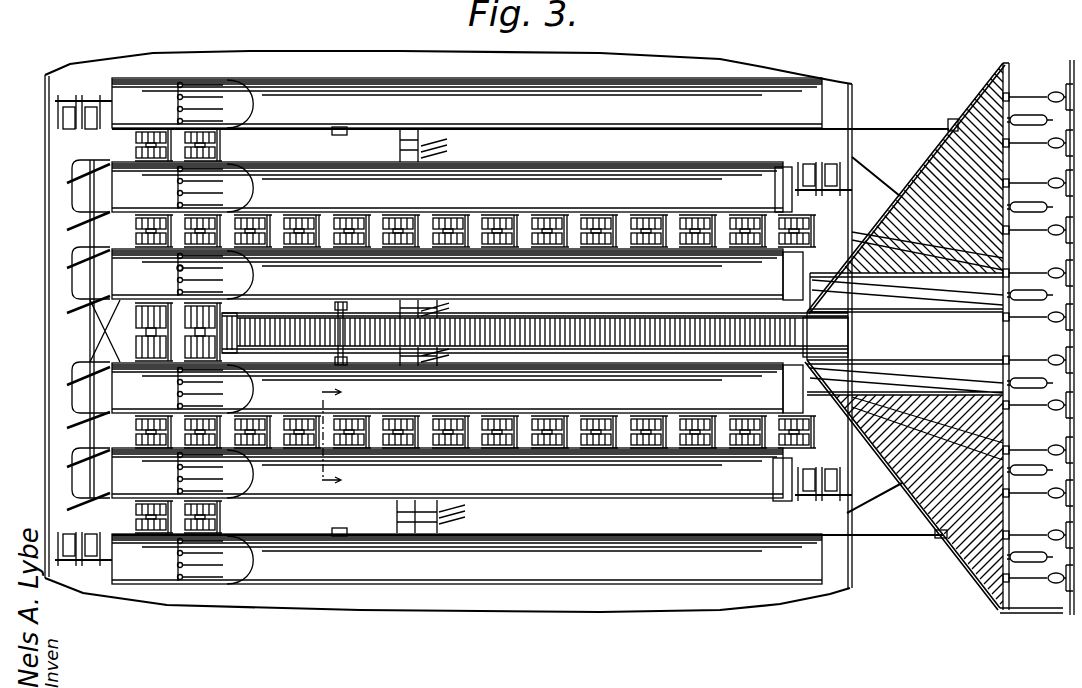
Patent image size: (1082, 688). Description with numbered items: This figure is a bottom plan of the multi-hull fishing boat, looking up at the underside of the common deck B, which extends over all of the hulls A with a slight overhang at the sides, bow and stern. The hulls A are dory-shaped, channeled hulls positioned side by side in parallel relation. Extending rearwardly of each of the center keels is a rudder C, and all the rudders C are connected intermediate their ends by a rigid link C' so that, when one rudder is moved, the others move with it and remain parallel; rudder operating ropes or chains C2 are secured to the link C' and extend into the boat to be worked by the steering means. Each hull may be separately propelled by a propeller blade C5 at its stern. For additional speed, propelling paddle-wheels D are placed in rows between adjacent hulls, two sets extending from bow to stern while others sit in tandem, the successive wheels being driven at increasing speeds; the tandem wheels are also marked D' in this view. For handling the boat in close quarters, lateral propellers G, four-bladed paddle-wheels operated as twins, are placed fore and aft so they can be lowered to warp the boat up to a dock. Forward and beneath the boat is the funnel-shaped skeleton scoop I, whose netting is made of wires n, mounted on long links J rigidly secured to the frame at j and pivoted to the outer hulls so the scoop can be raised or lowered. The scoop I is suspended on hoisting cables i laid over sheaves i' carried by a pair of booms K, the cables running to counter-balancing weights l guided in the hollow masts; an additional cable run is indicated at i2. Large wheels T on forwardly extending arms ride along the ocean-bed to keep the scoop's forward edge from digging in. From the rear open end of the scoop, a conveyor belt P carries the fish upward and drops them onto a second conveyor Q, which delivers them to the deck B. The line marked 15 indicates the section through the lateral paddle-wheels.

The hull A is at (467, 331).
The deck B is at (717, 600).
The lateral propeller G is at (88, 100).
The link securing point j is at (340, 127).
The link J is at (890, 133).
The scoop member I is at (1000, 76).
The wire n is at (938, 173).
The rudder C is at (58, 327).
The rigid link C' is at (56, 337).
The rudder operating rope or chain C2 is at (95, 318).
The propeller blade C5 is at (177, 271).
The paddle-wheel D is at (475, 245).
The roller D' is at (475, 474).
The weight l is at (431, 331).
The second conveyor Q is at (288, 326).
The conveyor belt P is at (528, 338).
The boom K is at (925, 262).
The hoisting cable i is at (925, 335).
The wheel or roller T is at (1022, 297).
The stud i2 is at (1045, 450).
The sheave i' is at (1038, 497).
The section line 15 is at (319, 439).